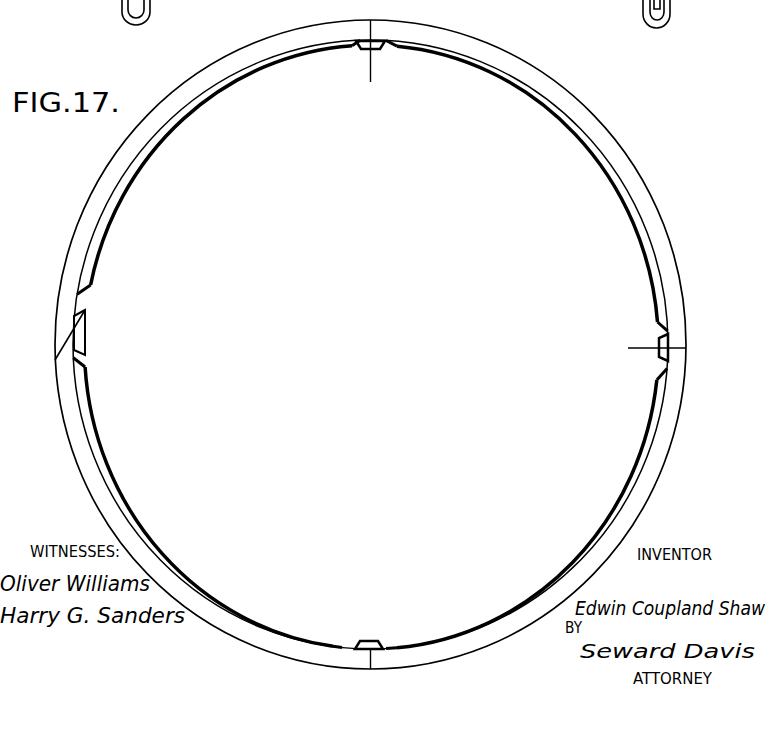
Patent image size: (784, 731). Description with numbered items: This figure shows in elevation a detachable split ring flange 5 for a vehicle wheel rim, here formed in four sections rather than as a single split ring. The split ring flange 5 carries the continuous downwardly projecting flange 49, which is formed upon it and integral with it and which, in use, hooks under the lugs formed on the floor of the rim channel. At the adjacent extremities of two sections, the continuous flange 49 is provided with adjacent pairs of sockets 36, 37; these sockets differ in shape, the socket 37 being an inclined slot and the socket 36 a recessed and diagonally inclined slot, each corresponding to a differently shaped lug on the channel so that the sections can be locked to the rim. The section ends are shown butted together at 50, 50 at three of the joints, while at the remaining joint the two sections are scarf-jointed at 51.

The detachable split ring flange 5 is at (182, 85).
The continuous flange 49 is at (557, 117).
The socket 36 is at (399, 50).
The socket 37 is at (394, 643).
The butt joint 50 is at (371, 641).
The scarf joint 51 is at (86, 326).